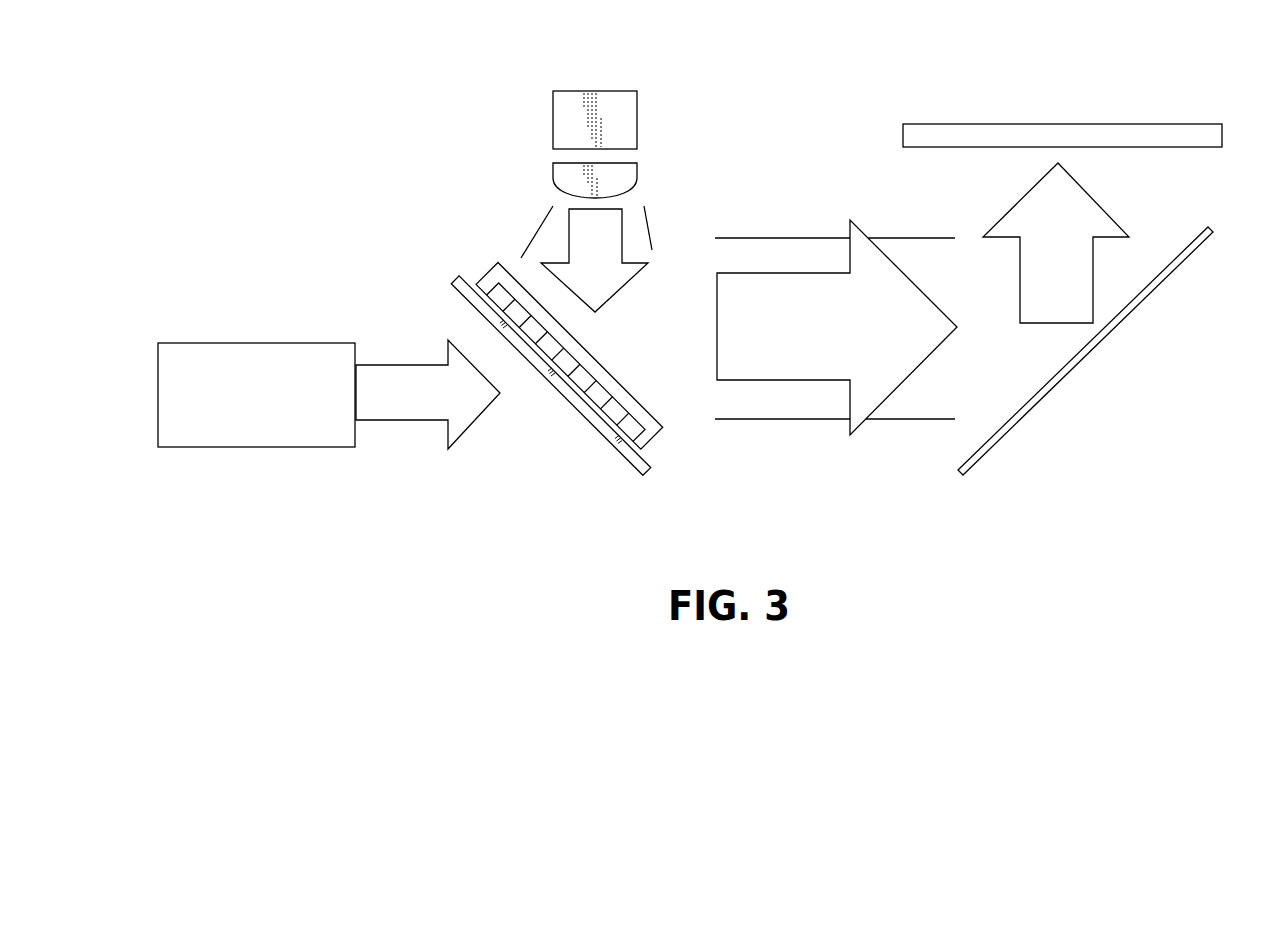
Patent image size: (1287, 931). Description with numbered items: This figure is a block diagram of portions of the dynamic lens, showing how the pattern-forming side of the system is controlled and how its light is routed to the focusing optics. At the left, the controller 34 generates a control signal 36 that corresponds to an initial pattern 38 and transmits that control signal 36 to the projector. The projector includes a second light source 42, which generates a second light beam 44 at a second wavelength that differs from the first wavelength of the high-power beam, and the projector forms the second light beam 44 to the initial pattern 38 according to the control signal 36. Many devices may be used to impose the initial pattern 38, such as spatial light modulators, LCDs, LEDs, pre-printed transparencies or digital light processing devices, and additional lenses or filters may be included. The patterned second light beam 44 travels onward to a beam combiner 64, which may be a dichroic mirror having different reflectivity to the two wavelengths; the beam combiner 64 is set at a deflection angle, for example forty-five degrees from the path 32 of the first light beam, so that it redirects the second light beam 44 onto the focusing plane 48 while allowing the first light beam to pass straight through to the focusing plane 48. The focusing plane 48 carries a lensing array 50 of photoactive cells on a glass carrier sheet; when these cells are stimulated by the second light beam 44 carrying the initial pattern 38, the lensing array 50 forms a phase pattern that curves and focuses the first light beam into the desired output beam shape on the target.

The path 32 is at (478, 268).
The controller 34 is at (256, 395).
The control signal 36 is at (428, 394).
The initial pattern 38 is at (430, 405).
The second light source 42 is at (560, 118).
The second light beam 44 is at (788, 380).
The focusing plane 48 is at (1079, 109).
The lensing array 50 is at (1133, 135).
The beam combiner 64 is at (1145, 293).